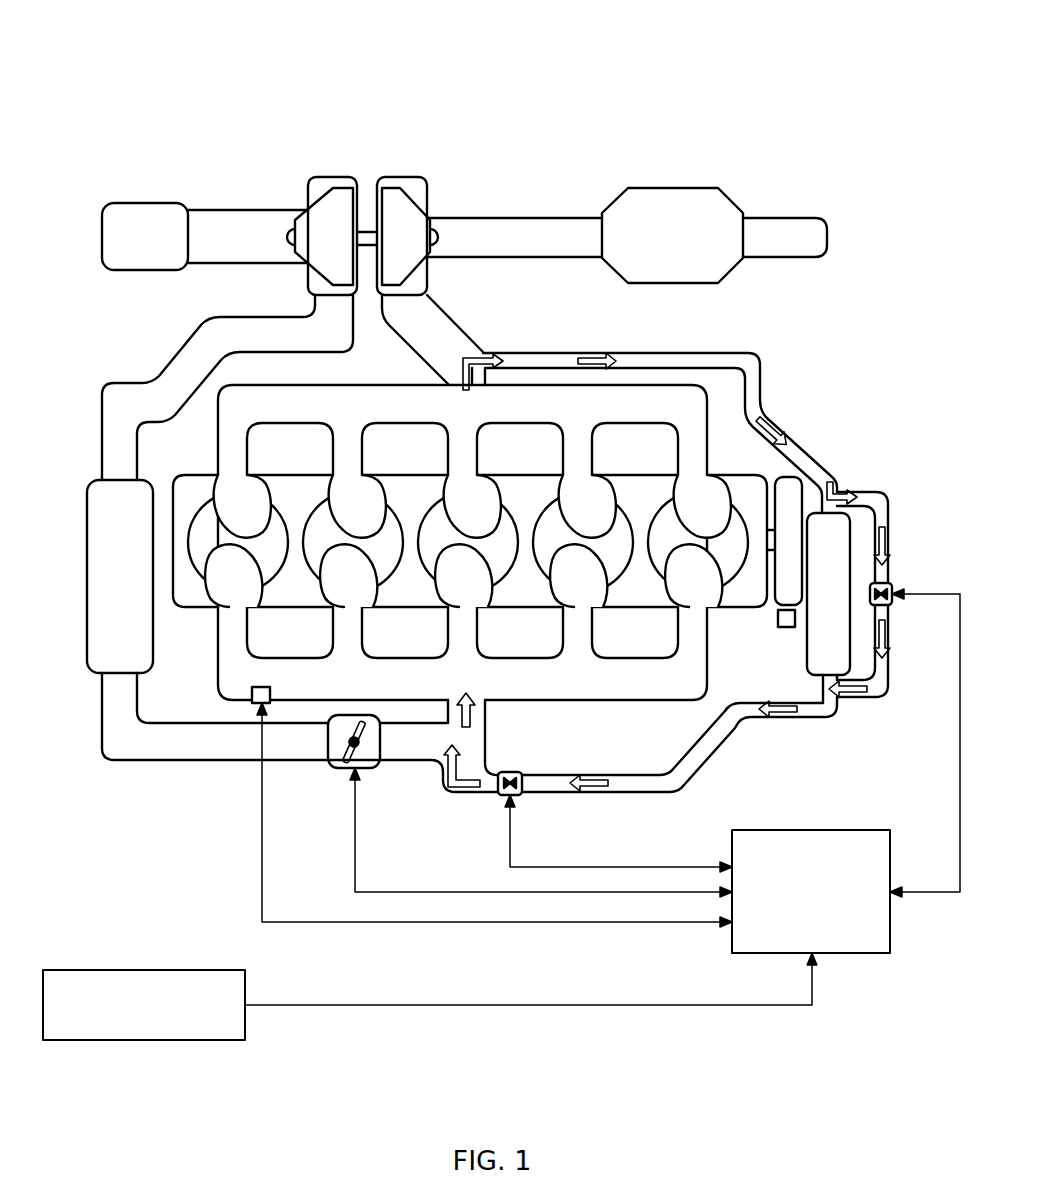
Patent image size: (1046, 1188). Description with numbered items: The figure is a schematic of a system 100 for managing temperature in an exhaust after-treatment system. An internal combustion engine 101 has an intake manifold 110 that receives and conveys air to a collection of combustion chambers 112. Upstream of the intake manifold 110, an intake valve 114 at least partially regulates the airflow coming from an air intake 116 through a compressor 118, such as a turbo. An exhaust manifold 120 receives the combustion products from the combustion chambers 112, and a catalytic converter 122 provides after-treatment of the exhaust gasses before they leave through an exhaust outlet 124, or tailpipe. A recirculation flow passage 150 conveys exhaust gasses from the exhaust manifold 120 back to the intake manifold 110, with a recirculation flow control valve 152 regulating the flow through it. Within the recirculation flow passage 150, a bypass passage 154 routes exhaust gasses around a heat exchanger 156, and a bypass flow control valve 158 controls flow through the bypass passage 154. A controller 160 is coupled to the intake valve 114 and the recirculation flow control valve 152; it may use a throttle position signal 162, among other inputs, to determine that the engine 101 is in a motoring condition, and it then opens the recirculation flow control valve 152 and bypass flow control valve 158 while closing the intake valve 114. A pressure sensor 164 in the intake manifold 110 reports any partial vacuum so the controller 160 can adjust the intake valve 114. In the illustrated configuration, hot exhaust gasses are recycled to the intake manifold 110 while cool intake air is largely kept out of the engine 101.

The system 100 is at (100, 59).
The internal combustion engine 101 is at (171, 146).
The intake manifold 110 is at (446, 680).
The combustion chambers 112 is at (248, 564).
The intake valve 114 is at (330, 770).
The air intake 116 is at (131, 246).
The compressor 118 is at (303, 172).
The exhaust manifold 120 is at (390, 413).
The catalytic converter 122 is at (659, 246).
The exhaust outlet 124 is at (781, 246).
The recirculation flow passage 150 is at (753, 352).
The recirculation flow control valve 152 is at (523, 795).
The bypass passage 154 is at (887, 491).
The heat exchanger 156 is at (815, 566).
The bypass flow control valve 158 is at (894, 583).
The controller 160 is at (797, 892).
The throttle position signal 162 is at (146, 1030).
The pressure sensor 164 is at (273, 689).